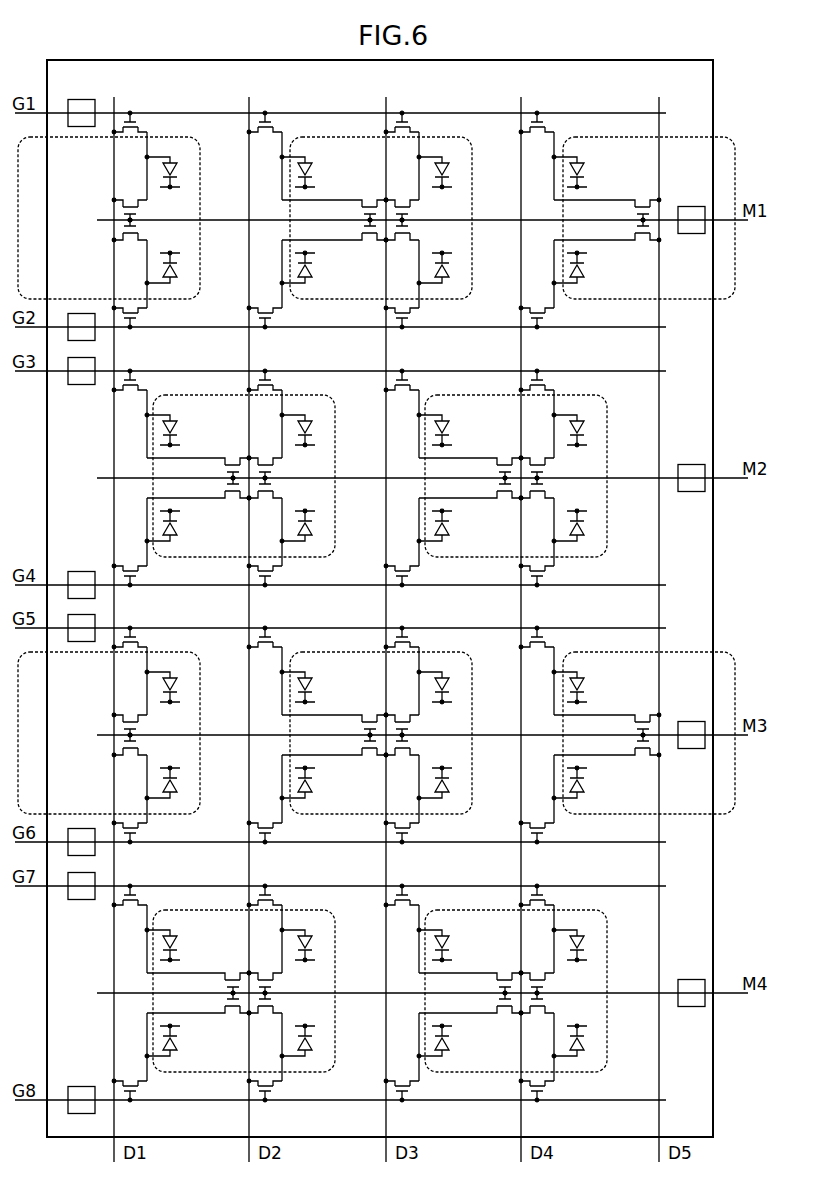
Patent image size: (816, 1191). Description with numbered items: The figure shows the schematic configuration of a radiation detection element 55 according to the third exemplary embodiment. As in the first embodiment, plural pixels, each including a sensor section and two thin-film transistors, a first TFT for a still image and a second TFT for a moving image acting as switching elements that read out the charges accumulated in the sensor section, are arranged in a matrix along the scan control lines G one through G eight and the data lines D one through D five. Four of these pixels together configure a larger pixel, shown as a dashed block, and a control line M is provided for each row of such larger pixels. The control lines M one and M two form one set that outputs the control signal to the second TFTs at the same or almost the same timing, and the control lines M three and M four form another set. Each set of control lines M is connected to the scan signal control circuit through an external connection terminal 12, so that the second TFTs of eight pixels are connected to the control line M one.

The radiation detection element 55 is at (645, 60).
The external connection terminal 12 is at (688, 206).